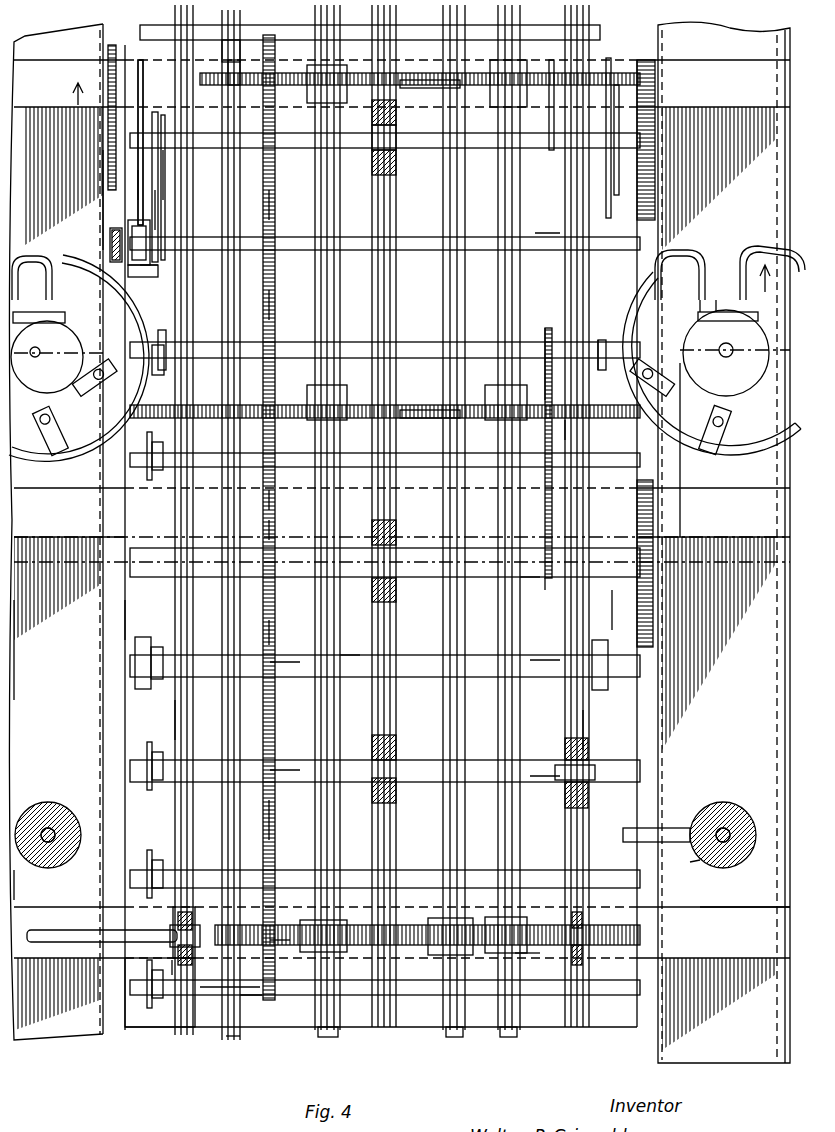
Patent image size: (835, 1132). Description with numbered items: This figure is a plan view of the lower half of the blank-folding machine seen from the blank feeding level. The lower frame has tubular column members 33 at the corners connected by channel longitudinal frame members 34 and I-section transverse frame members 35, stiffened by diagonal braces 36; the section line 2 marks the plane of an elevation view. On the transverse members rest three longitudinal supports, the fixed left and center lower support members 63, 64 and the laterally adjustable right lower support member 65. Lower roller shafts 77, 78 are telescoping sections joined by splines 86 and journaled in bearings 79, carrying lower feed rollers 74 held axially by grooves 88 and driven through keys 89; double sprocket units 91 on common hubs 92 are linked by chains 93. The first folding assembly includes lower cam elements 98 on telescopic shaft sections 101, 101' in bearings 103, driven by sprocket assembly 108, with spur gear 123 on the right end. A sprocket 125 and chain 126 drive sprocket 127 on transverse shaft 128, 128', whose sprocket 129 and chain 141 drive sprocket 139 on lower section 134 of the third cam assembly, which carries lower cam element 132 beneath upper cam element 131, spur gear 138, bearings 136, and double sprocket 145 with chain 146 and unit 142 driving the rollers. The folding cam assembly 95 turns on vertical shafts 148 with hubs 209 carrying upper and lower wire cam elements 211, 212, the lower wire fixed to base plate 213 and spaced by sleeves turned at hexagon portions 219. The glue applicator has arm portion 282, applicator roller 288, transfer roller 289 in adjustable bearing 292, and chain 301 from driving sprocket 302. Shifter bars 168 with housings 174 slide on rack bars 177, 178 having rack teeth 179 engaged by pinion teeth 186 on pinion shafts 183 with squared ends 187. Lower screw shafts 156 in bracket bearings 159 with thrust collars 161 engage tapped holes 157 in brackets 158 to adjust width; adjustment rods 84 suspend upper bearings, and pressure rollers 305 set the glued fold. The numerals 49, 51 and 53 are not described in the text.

The lower cam element 98 is at (136, 55).
The driving sprocket 302 is at (108, 72).
The section line 2 is at (411, 187).
The sprocket 125 is at (155, 112).
The circumferential groove 88 is at (228, 48).
The pinion shaft 183 is at (238, 96).
The rack bar 177 is at (290, 80).
The pinion teeth 186 is at (236, 72).
The rack bar 178 is at (405, 92).
The housing 174 is at (345, 102).
The bearing 103 is at (372, 162).
The lower cam shaft section 101 is at (261, 517).
The lower cam shaft section 101' is at (546, 121).
The chain 93 is at (276, 196).
The double sprocket unit 91 is at (283, 252).
The arm portion 282 is at (137, 174).
The chain 126 is at (166, 178).
The chain 301 is at (157, 205).
The applicator roller 288 is at (150, 232).
The sprocket assembly 108 is at (103, 182).
The bearing 292 is at (112, 240).
The transfer roller 289 is at (155, 268).
The shifter bar 168 is at (228, 296).
The sprocket 127 is at (165, 335).
The base plate 213 is at (50, 323).
The vertical shaft 148 is at (38, 358).
The hub 209 is at (90, 380).
The transverse shaft section 128 is at (157, 375).
The transverse shaft section 128' is at (612, 337).
The lower feed roller 74 is at (158, 445).
The hexagon portion 219 is at (64, 428).
The upper folding cam element 211 is at (686, 260).
The lower folding cam element 212 is at (700, 306).
The folding cam assembly 95 is at (742, 391).
The key 89 is at (540, 238).
The spur gear 123 is at (640, 212).
The sprocket 129 is at (548, 328).
The chain 141 is at (566, 430).
The common hub 92 is at (276, 300).
The chain 146 is at (270, 500).
The double sprocket 145 is at (275, 528).
The bearing 136 is at (396, 540).
The upper cam element 131 is at (298, 570).
The double sprocket unit 142 is at (276, 632).
The spline 86 is at (350, 660).
The lower cam shaft section 134 is at (530, 578).
The sprocket 139 is at (548, 586).
The spur gear 138 is at (655, 606).
The lower cam element 132 is at (125, 620).
The pressure roller 305 is at (140, 658).
The longitudinal frame member 34 is at (690, 735).
The left lower support member 63 is at (175, 718).
The center lower support member 64 is at (382, 740).
The right lower support member 65 is at (584, 730).
The lower roller shaft section 78 is at (545, 660).
The bearing 79 is at (396, 762).
The lower roller shaft section 77 is at (290, 680).
The shaft end 51 is at (55, 824).
The frame 49 is at (31, 885).
The diagonal brace 36 is at (672, 828).
The shaft end 53 is at (729, 824).
The vertical column member 33 is at (696, 866).
The transverse frame member 35 is at (728, 925).
The lower screw shaft 156 is at (86, 920).
The thrust collar 161 is at (178, 928).
The bracket bearing 159 is at (178, 968).
The adjustment rod 84 is at (228, 985).
The tapped hole 157 is at (583, 920).
The bracket 158 is at (528, 955).
The squared end 187 is at (242, 1040).
The rack teeth 179 is at (280, 946).